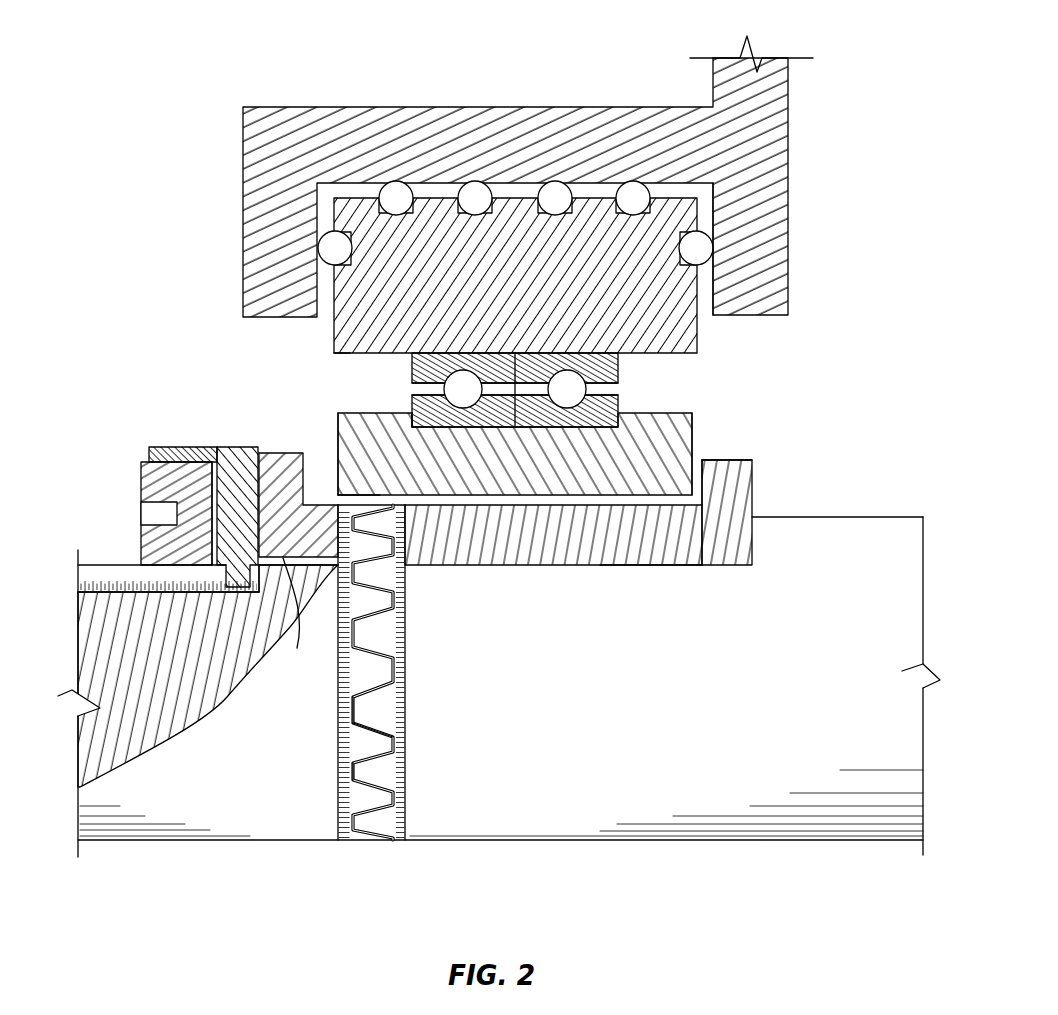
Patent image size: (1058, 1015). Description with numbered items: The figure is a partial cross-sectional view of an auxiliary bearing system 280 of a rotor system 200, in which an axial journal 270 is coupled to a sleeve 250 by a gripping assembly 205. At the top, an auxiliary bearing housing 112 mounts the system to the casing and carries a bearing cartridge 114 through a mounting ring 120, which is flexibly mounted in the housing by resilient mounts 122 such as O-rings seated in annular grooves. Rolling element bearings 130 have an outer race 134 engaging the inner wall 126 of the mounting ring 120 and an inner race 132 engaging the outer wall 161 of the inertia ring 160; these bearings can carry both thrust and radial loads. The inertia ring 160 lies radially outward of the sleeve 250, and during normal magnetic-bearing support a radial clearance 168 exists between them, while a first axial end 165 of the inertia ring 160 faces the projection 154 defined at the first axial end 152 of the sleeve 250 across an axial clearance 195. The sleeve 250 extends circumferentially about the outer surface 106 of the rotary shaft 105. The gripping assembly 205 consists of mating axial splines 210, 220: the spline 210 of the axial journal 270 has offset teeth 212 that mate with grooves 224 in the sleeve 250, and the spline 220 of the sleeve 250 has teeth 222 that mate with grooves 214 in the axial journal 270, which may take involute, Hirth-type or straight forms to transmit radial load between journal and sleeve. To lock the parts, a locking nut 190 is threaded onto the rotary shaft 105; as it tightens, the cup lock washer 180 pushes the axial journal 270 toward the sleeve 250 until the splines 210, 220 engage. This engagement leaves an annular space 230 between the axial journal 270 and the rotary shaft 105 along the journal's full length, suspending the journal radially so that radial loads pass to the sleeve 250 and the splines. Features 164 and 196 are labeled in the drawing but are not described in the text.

The rotor system 200 is at (168, 46).
The auxiliary bearing housing 112 is at (515, 187).
The bearing cartridge 114 is at (694, 372).
The mounting ring 120 is at (515, 275).
The resilient mounts 122 is at (633, 194).
The inner wall of the mounting ring 126 is at (346, 356).
The rolling element bearings 130 is at (602, 362).
The inner race 132 is at (650, 422).
The outer race 134 is at (620, 368).
The inertia ring 160 is at (529, 433).
The outer wall of the inertia ring 161 is at (404, 412).
The side wall of platform 164 is at (337, 452).
The first axial end of the inertia ring 165 is at (694, 432).
The radial clearance 168 is at (622, 490).
The bottom edge 196 is at (330, 481).
The sleeve 250 is at (553, 560).
The first axial end 152 is at (753, 548).
The projection 154 is at (753, 485).
The axial clearance 195 is at (700, 485).
The outer surface of the rotary shaft 106 is at (890, 517).
The rotary shaft 105 is at (499, 687).
The cup lock washer 180 is at (236, 452).
The locking nut 190 is at (153, 493).
The axial journal 270 is at (298, 505).
The auxiliary bearing system 280 is at (196, 308).
The annular space 230 is at (293, 618).
The gripping assembly 205 is at (372, 706).
The axial spline 210 is at (340, 795).
The teeth 212 is at (360, 742).
The grooves 214 is at (358, 708).
The axial spline 220 is at (406, 745).
The teeth 222 is at (372, 707).
The grooves 224 is at (396, 603).